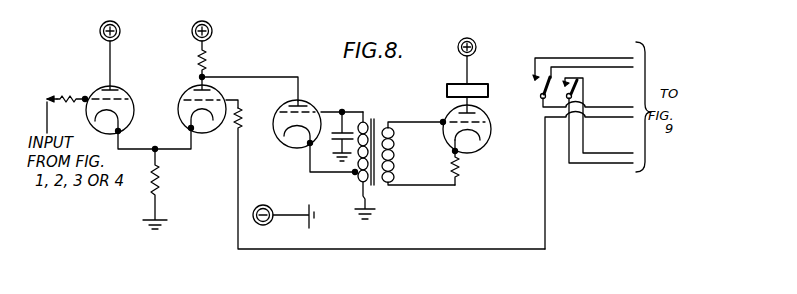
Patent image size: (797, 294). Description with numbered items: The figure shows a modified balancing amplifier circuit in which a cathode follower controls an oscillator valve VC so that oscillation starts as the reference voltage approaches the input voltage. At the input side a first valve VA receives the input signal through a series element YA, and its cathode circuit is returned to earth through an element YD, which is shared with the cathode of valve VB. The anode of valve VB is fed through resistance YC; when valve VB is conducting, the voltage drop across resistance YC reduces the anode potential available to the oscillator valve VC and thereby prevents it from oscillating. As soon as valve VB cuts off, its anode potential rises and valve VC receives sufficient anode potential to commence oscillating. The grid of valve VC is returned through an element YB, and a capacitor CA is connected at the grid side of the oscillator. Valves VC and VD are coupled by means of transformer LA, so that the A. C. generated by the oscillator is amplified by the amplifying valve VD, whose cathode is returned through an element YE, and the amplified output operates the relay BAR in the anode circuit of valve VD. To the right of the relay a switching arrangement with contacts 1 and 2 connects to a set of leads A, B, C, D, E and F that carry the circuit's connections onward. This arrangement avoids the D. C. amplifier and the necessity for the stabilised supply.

The input grid resistor YA is at (71, 88).
The first amplifier tube VA is at (119, 85).
The cathode resistor YD is at (164, 188).
The resistance YC is at (214, 59).
The valve VB is at (226, 88).
The grid resistor YB is at (389, 178).
The oscillator valve VC is at (309, 136).
The capacitor CA is at (334, 136).
The transformer LA is at (404, 161).
The amplifying valve VD is at (475, 130).
The cathode resistor of output tube YE is at (466, 168).
The relay BAR is at (478, 84).
The terminal lead A is at (583, 61).
The terminal lead B is at (592, 75).
The terminal lead C is at (588, 98).
The terminal lead D is at (589, 181).
The terminal lead E is at (598, 116).
The terminal lead F is at (601, 139).
The switch contact 1 is at (540, 91).
The switch contact 2 is at (566, 93).